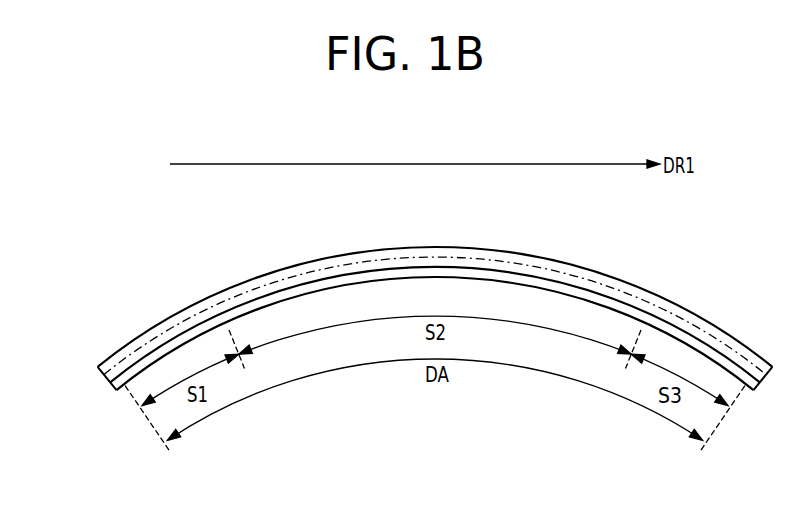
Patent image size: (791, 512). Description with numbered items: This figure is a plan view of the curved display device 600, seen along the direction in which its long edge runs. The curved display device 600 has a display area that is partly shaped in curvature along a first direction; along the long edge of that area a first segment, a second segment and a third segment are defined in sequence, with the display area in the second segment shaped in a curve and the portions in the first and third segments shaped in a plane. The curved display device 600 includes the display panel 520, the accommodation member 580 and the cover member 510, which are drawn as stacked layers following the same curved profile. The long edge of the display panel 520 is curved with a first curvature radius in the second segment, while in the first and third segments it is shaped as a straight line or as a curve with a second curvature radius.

The curved display device 600 is at (398, 314).
The display panel 520 is at (437, 257).
The accommodation member 580 is at (106, 375).
The cover member 510 is at (111, 389).